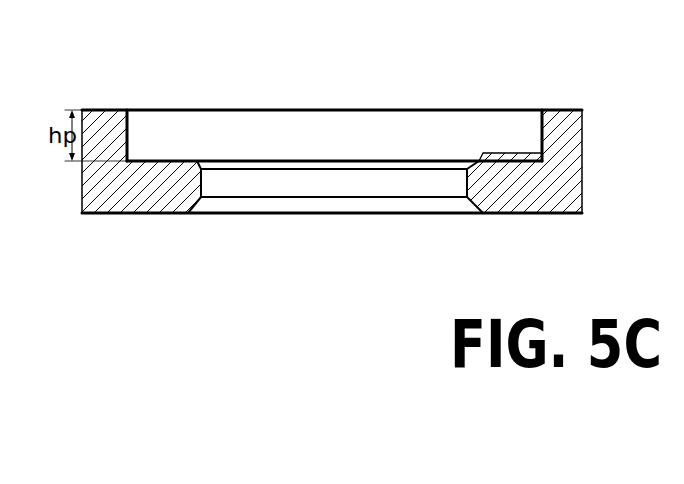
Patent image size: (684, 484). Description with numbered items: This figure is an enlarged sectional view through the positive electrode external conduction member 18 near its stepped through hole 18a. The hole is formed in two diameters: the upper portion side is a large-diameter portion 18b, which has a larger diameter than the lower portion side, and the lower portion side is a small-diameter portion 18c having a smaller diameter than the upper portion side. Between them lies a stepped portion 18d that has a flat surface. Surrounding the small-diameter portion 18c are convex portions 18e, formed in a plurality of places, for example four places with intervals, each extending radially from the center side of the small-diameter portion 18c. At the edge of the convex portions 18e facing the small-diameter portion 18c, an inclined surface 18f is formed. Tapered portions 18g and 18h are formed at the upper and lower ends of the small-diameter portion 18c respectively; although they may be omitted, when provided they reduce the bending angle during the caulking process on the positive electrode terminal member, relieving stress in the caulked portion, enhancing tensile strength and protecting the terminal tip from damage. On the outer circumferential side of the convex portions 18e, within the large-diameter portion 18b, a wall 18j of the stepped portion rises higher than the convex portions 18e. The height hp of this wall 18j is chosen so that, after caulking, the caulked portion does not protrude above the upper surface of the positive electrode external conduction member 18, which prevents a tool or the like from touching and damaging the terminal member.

The positive electrode external conduction member 18 is at (560, 195).
The stepped through hole 18a is at (332, 104).
The large-diameter portion 18b is at (258, 135).
The small-diameter portion 18c is at (352, 190).
The stepped portion 18d is at (165, 158).
The convex portions 18e is at (509, 156).
The inclined surface 18f is at (477, 153).
The tapered portion 18g is at (206, 167).
The tapered portion 18h is at (273, 205).
The wall of stepped portion 18j is at (133, 132).